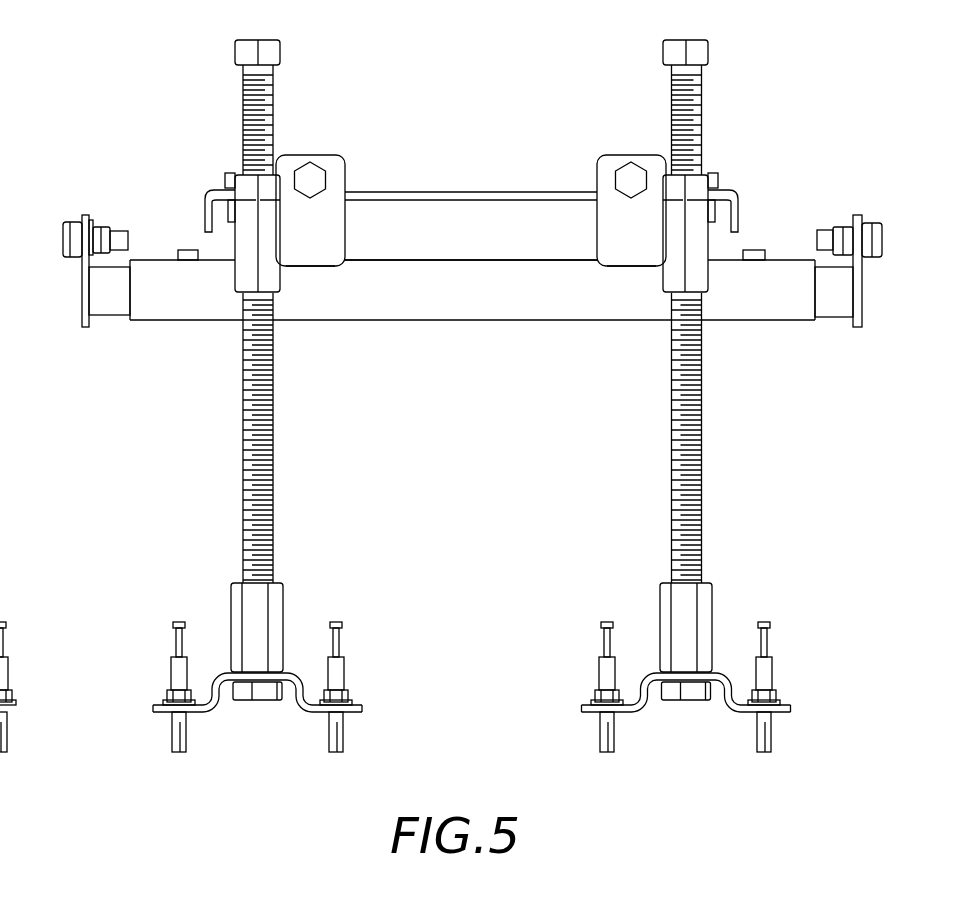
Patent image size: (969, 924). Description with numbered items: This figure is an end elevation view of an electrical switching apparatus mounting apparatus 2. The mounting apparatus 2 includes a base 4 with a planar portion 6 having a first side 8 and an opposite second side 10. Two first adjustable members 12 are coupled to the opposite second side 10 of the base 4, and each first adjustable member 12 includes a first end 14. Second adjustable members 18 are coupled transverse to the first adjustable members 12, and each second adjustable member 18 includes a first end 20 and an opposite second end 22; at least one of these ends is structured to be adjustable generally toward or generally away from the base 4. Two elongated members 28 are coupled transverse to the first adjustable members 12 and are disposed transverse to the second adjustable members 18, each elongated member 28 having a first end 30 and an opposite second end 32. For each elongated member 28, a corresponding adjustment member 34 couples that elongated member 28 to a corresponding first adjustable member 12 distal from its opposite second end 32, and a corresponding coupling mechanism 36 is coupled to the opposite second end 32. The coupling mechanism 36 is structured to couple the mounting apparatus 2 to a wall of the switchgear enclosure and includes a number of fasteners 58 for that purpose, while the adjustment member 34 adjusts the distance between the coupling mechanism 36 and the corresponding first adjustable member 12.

The electrical switching apparatus mounting apparatus 2 is at (460, 497).
The base 4 is at (471, 190).
The planar portion 6 is at (469, 192).
The first side 8 is at (520, 192).
The opposite second side 10 is at (499, 200).
The first adjustable member 12 is at (332, 244).
The first end 14 is at (306, 253).
The second adjustable member 18 is at (491, 304).
The first end 20 is at (862, 304).
The opposite second end 22 is at (80, 302).
The elongated member 28 is at (231, 437).
The first end 30 is at (247, 39).
The opposite second end 32 is at (250, 702).
The adjustment member 34 is at (244, 236).
The coupling mechanism 36 is at (230, 608).
The fastener 58 is at (170, 735).